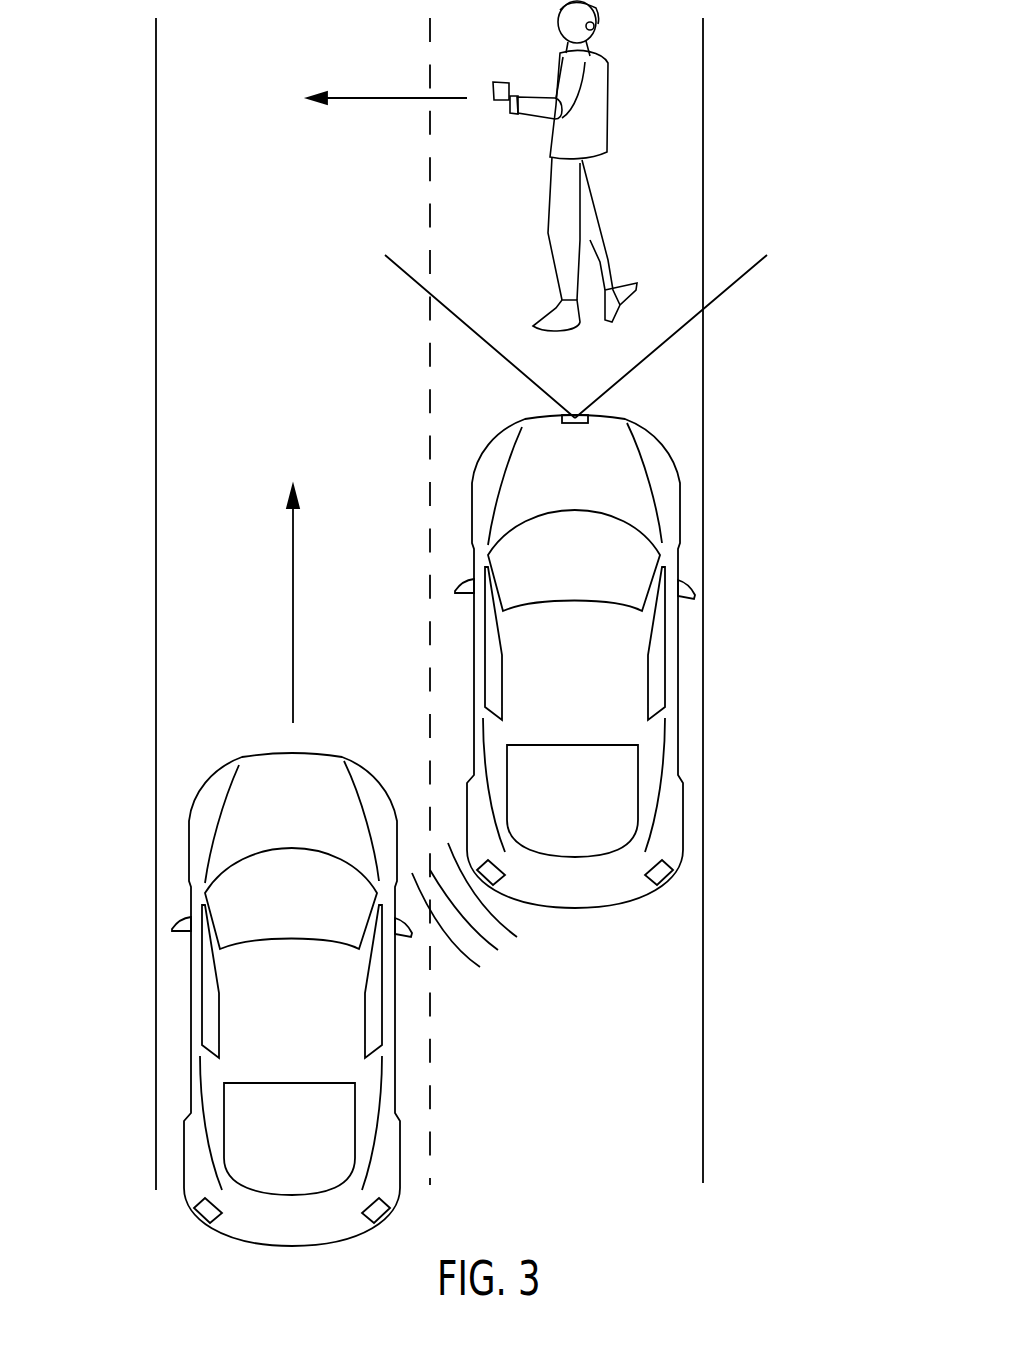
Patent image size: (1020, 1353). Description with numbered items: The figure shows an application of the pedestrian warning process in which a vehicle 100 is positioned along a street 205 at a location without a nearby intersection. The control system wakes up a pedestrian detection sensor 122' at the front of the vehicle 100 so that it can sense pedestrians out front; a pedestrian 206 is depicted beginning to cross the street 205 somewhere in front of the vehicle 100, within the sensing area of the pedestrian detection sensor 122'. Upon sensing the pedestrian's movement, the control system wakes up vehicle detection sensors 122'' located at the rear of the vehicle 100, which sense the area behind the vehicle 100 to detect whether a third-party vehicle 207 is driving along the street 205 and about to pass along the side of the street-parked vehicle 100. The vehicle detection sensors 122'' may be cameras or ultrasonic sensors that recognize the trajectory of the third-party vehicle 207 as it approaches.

The vehicle 100 is at (576, 611).
The pedestrian detection sensor 122' is at (576, 370).
The vehicle detection sensors 122'' is at (542, 881).
The street 205 is at (163, 130).
The pedestrian 206 is at (602, 105).
The third-party vehicle 207 is at (328, 1038).